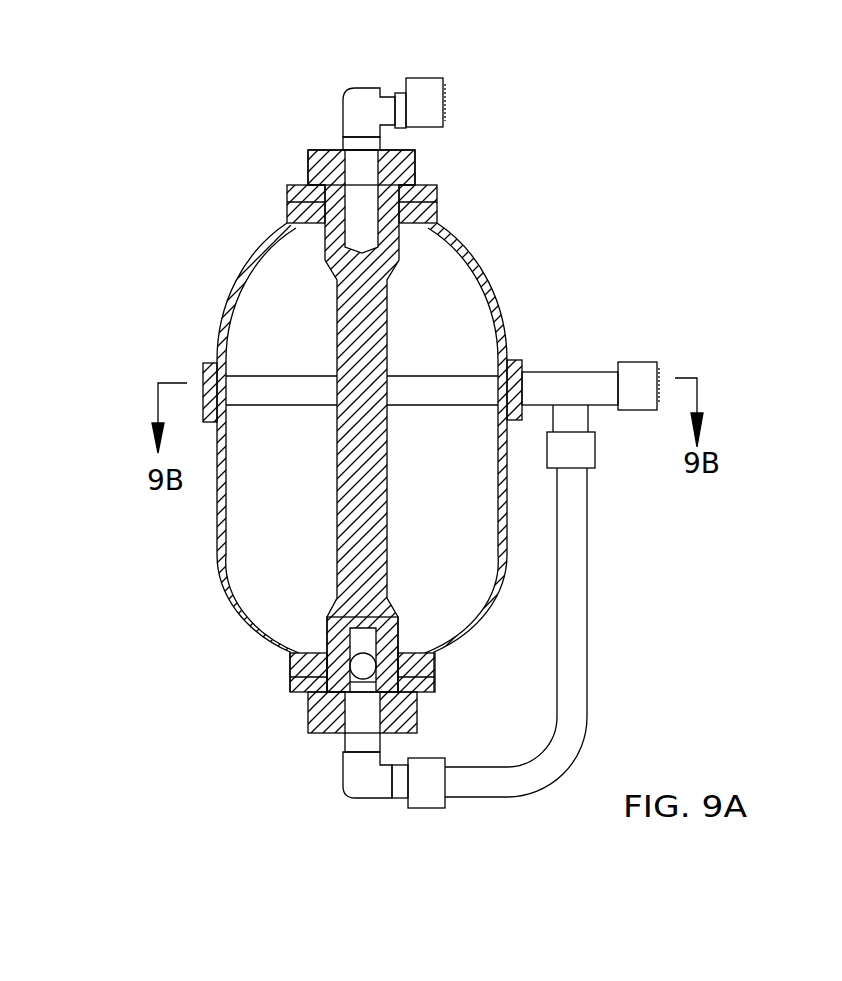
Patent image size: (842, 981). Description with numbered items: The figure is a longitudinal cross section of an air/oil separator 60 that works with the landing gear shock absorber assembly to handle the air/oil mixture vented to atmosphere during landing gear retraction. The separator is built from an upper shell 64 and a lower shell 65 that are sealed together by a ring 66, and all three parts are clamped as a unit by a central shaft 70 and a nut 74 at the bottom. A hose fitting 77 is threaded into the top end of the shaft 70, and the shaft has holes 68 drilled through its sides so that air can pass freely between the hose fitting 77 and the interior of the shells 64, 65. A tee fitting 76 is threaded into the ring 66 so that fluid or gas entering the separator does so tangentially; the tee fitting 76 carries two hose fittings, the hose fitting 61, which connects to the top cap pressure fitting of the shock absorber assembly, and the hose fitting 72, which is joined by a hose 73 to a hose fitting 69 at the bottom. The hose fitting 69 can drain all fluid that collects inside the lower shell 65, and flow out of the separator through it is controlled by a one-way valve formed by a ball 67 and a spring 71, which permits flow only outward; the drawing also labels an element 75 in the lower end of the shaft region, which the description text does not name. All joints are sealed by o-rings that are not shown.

The air/oil separator 60 is at (205, 325).
The hose fitting 61 is at (660, 375).
The upper shell 64 is at (493, 285).
The lower shell 65 is at (217, 512).
The ring 66 is at (203, 396).
The ball 67 is at (288, 658).
The holes 68 is at (333, 273).
The hose fitting 69 is at (425, 808).
The shaft 70 is at (387, 490).
The spring 71 is at (410, 705).
The hose fitting 72 is at (598, 460).
The hose 73 is at (587, 637).
The nut 74 is at (312, 712).
The check valve ball 75 is at (398, 645).
The tee fitting 76 is at (556, 372).
The hose fitting 77 is at (418, 78).